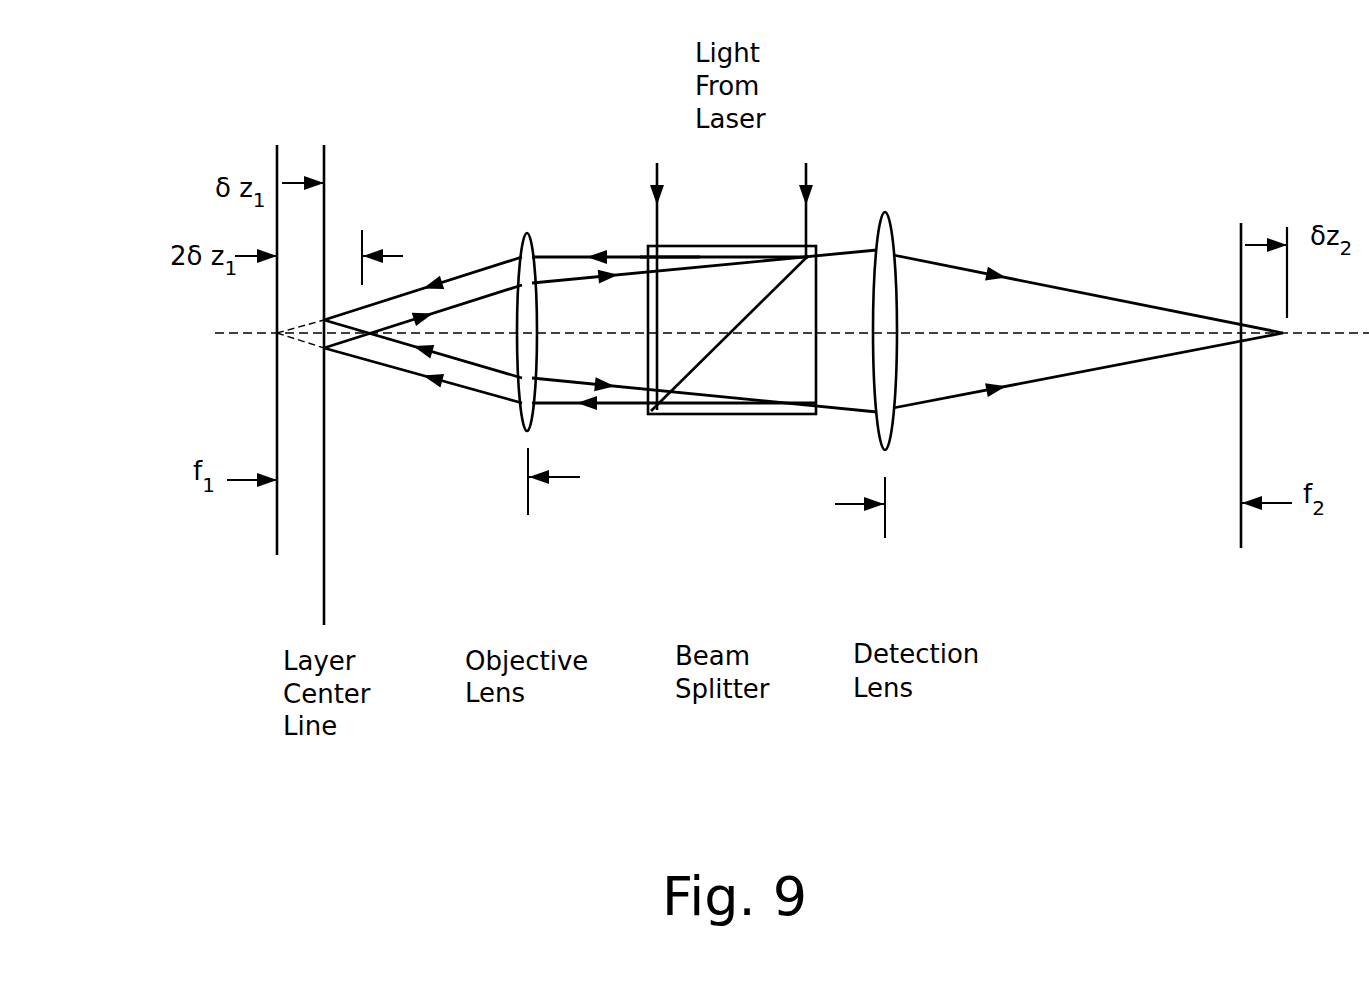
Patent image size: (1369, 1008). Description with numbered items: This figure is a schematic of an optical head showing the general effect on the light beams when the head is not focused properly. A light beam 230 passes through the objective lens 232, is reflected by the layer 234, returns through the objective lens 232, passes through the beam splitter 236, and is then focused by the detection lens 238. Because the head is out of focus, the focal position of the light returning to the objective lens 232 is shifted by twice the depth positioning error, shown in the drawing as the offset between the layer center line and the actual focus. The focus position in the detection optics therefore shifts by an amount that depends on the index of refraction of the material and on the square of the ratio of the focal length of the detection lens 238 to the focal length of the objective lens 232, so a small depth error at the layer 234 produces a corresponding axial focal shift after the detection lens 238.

The light beam 230 is at (617, 255).
The objective lens 232 is at (520, 250).
The layer 234 is at (325, 510).
The beam splitter 236 is at (743, 373).
The detection lens 238 is at (885, 250).